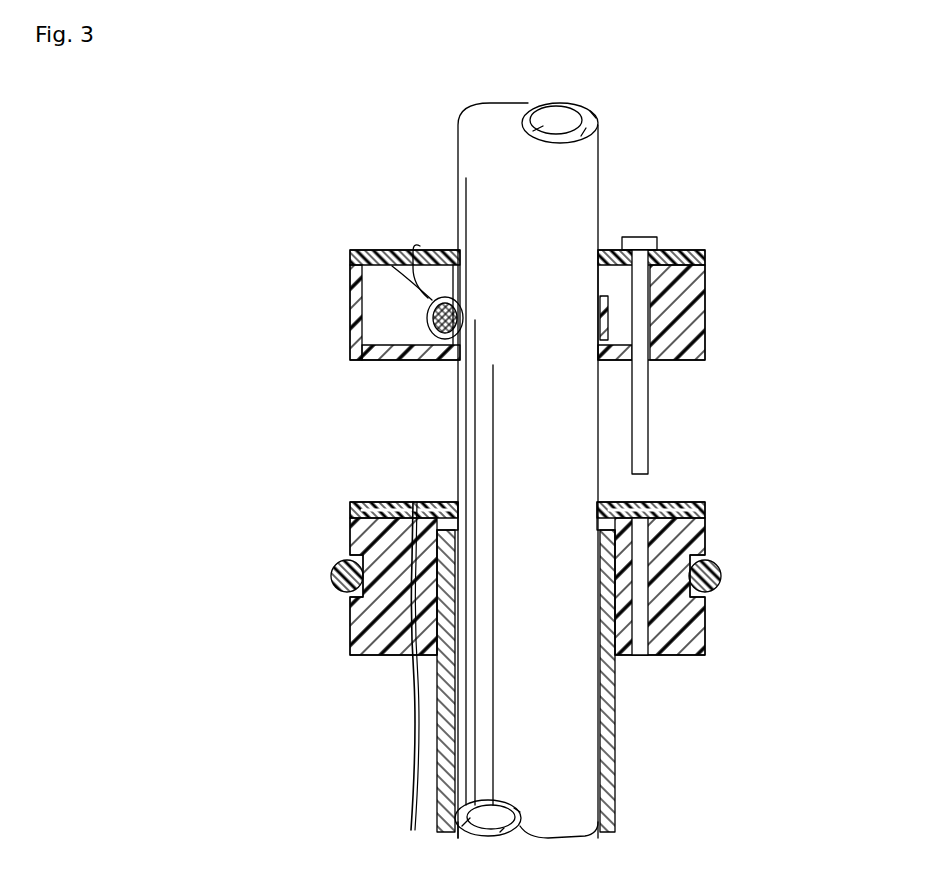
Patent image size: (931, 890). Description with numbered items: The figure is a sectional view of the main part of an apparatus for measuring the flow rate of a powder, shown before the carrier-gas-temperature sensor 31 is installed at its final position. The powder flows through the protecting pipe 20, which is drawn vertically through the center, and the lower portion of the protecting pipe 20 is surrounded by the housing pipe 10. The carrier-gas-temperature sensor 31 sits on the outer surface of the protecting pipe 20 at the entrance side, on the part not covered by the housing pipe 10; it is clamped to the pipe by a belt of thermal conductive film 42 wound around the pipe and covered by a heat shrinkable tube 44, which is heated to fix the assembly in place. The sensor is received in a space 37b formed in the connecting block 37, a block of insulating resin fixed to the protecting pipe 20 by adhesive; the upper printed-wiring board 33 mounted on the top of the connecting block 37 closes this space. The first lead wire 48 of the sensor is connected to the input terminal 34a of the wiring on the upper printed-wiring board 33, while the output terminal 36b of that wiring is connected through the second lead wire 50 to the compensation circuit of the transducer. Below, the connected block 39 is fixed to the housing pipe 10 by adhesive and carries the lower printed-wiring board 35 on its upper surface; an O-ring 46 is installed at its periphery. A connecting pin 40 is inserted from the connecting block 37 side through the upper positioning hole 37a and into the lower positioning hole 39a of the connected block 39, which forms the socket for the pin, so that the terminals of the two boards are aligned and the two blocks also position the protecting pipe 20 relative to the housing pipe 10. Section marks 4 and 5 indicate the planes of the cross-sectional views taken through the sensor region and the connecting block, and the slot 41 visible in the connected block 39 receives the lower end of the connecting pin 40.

The housing pipe 10 is at (608, 722).
The protecting pipe 20 is at (565, 772).
The carrier-gas-temperature sensor 31 is at (452, 265).
The upper printed-wiring board 33 is at (680, 252).
The input terminal of the wiring of the upper printed-wiring board 34a is at (413, 250).
The lower printed-wiring board 35 is at (670, 505).
The output terminal of the wiring 36b is at (412, 502).
The connecting block 37 is at (709, 253).
The upper positioning hole 37a is at (680, 283).
The space for housing a sensor 37b is at (374, 347).
The connected block 39 is at (711, 540).
The lower positioning hole 39a is at (640, 617).
The connecting pin 40 is at (640, 380).
The slot 41 is at (640, 512).
The belt of thermal conductive film 42 is at (400, 347).
The heat shrinkable tube 44 is at (440, 347).
The O-ring 46 is at (722, 572).
The first lead wire 48 is at (395, 265).
The second lead wire 50 is at (415, 695).
The section line 4 is at (420, 320).
The section line 5 is at (352, 212).